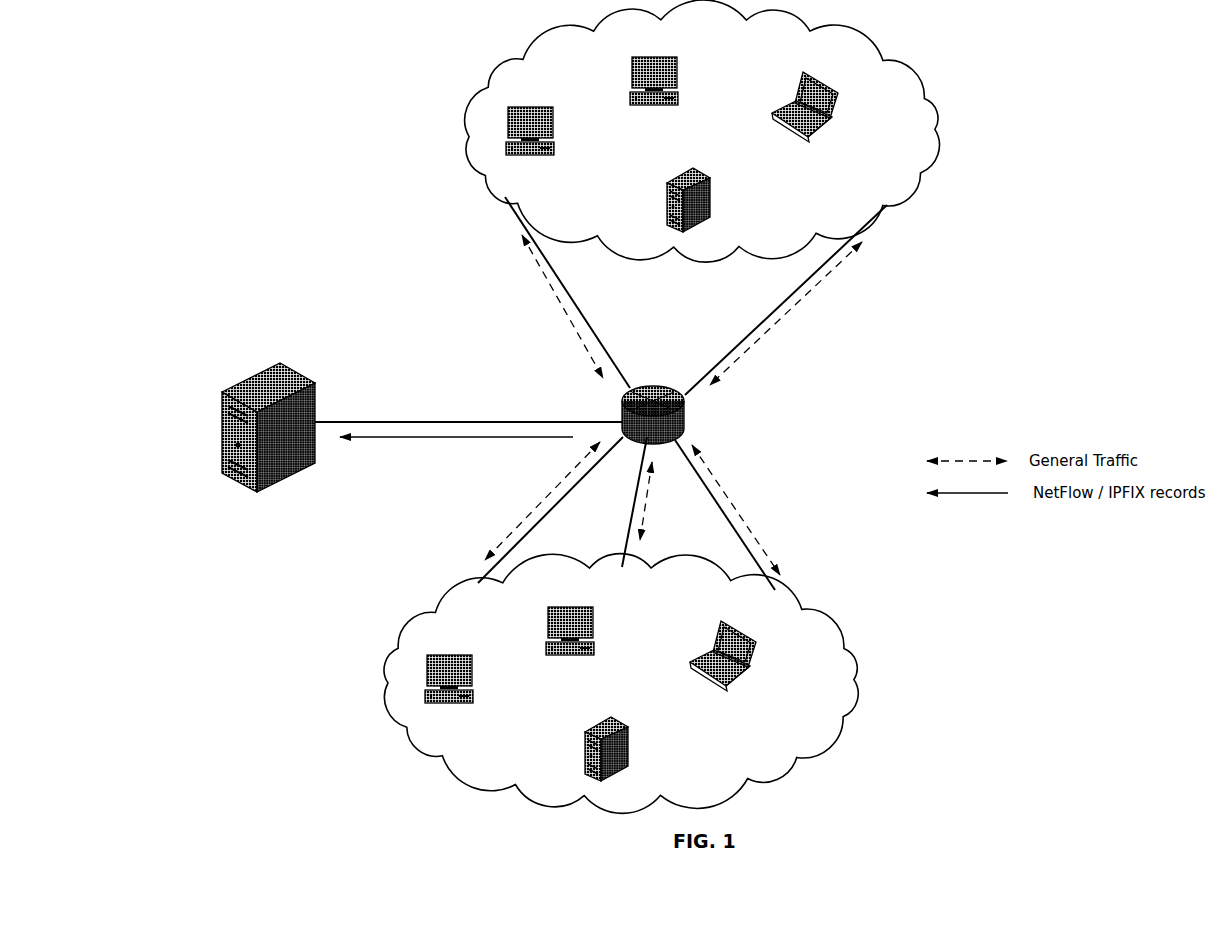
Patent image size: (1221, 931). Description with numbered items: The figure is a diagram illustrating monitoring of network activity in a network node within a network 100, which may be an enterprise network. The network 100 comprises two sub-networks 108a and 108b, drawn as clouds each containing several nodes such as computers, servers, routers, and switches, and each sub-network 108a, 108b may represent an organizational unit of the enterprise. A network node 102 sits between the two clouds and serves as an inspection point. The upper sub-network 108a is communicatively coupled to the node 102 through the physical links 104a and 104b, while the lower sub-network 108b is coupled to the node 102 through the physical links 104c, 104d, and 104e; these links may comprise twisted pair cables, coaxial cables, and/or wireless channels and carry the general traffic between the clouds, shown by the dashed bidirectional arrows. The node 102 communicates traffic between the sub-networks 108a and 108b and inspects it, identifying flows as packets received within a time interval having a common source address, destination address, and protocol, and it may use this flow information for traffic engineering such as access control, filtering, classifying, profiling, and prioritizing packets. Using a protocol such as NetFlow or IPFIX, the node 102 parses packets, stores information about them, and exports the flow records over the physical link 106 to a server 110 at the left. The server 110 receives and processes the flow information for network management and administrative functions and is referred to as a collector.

The network 100 is at (268, 112).
The network node 102 is at (686, 414).
The physical link 104a is at (562, 282).
The physical link 104b is at (781, 300).
The physical link 104c is at (536, 530).
The physical link 104d is at (633, 504).
The physical link 104e is at (727, 520).
The physical link 106 is at (428, 422).
The sub-network 108a is at (484, 82).
The sub-network 108b is at (420, 622).
The server 110 is at (244, 382).